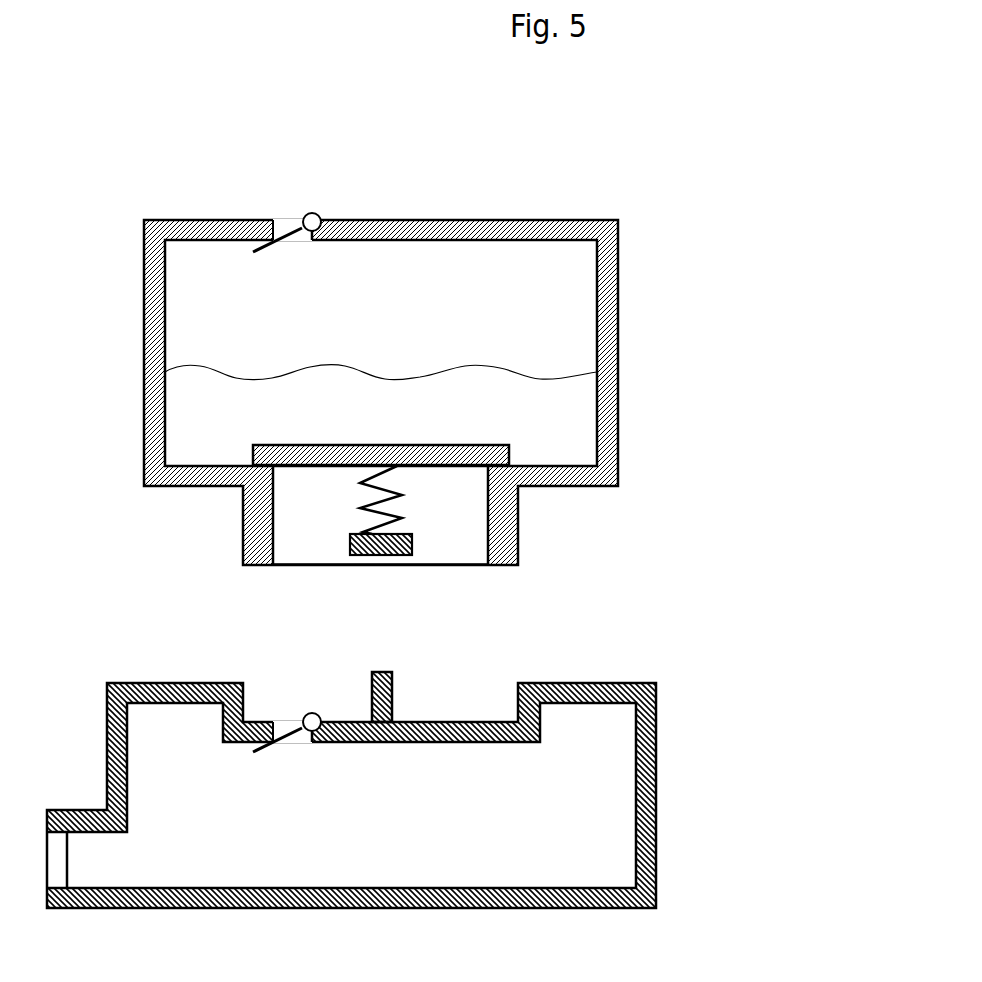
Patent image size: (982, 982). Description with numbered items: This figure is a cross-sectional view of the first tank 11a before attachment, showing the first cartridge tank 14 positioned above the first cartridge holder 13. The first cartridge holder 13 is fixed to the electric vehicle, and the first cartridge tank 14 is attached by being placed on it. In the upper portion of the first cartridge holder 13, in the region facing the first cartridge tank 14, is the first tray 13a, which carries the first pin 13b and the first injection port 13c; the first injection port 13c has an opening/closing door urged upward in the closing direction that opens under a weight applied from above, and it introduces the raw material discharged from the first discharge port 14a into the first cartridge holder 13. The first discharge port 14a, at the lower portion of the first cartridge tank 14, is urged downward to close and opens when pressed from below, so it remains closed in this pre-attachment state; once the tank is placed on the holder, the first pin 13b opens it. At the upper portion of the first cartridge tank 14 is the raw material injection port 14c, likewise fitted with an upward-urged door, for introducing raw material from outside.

The first tank 11a is at (843, 152).
The first cartridge tank 14 is at (667, 240).
The first discharge port 14a is at (320, 545).
The raw material injection port 14c is at (293, 236).
The first cartridge holder 13 is at (715, 665).
The first tray 13a is at (490, 700).
The first pin 13b is at (380, 672).
The first injection port 13c is at (295, 736).